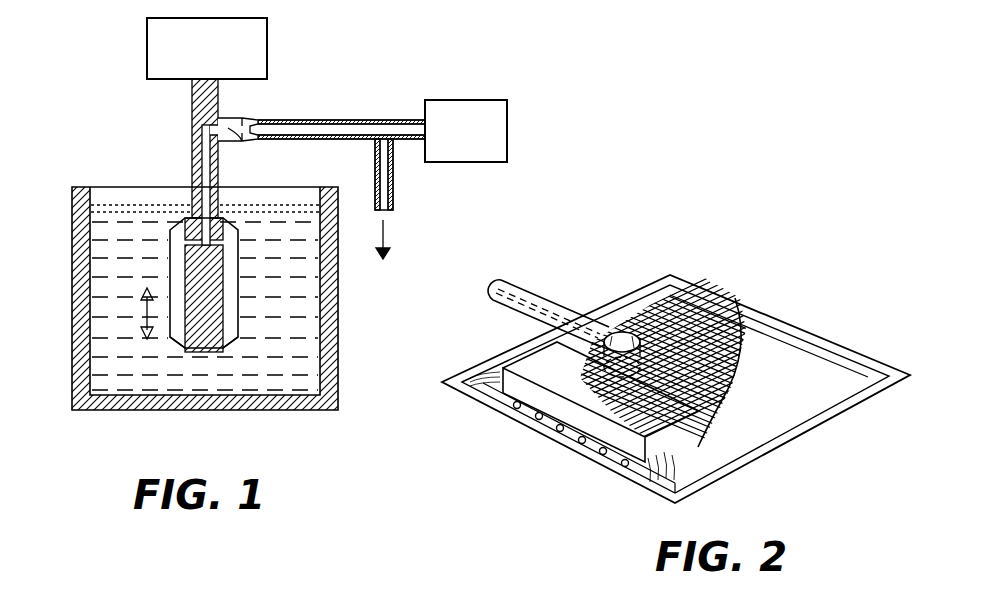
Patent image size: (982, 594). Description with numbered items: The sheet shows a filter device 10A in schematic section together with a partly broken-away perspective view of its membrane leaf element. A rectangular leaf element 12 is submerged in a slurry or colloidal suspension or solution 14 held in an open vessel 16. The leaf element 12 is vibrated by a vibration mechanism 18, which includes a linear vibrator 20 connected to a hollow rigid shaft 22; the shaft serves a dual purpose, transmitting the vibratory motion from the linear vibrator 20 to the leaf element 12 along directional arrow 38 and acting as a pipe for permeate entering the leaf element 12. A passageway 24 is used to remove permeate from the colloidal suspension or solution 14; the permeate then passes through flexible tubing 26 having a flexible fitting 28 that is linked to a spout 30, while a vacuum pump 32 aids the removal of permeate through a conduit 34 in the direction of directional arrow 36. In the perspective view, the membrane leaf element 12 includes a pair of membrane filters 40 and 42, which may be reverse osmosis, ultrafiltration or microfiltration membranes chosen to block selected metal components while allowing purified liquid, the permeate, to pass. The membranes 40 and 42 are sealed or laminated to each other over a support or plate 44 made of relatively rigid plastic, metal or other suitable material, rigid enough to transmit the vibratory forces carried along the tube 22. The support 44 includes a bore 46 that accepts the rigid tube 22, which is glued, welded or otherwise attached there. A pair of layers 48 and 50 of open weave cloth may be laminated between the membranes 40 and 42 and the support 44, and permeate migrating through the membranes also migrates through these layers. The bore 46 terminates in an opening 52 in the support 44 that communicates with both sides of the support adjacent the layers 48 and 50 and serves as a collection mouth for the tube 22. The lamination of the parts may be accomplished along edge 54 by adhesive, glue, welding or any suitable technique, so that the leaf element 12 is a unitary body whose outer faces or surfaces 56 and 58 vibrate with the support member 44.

In FIG. 1, the filter device 10A is at (360, 76).
In FIG. 1, the rectangular leaf element 12 is at (156, 270).
In FIG. 2, the rectangular leaf element 12 is at (808, 442).
In FIG. 1, the colloidal suspension or solution 14 is at (305, 372).
In FIG. 1, the open vessel 16 is at (325, 400).
In FIG. 1, the vibration mechanism 18 is at (120, 63).
In FIG. 1, the linear vibrator 20 is at (268, 46).
In FIG. 1, the hollow rigid shaft 22 is at (192, 116).
In FIG. 2, the hollow rigid shaft 22 is at (530, 298).
In FIG. 1, the passageway 24 is at (204, 170).
In FIG. 1, the flexible tubing 26 is at (345, 120).
In FIG. 1, the flexible fitting 28 is at (250, 117).
In FIG. 1, the spout 30 is at (238, 143).
In FIG. 1, the vacuum pump 32 is at (500, 104).
In FIG. 1, the conduit 34 is at (395, 200).
In FIG. 1, the directional arrow 36 is at (388, 234).
In FIG. 1, the directional arrow 38 is at (133, 318).
In FIG. 2, the membrane filter 40 is at (802, 320).
In FIG. 1, the membrane filter 42 is at (163, 243).
In FIG. 2, the membrane filter 42 is at (524, 438).
In FIG. 1, the support 44 is at (193, 353).
In FIG. 2, the support 44 is at (530, 366).
In FIG. 2, the bore 46 is at (622, 338).
In FIG. 2, the layer of open weave cloth 48 is at (738, 298).
In FIG. 2, the layer of open weave cloth 50 is at (603, 465).
In FIG. 2, the opening 52 is at (692, 288).
In FIG. 2, the edge 54 is at (623, 477).
In FIG. 1, the outer face 56 is at (170, 336).
In FIG. 2, the outer face 56 is at (818, 357).
In FIG. 1, the outer face 58 is at (240, 337).